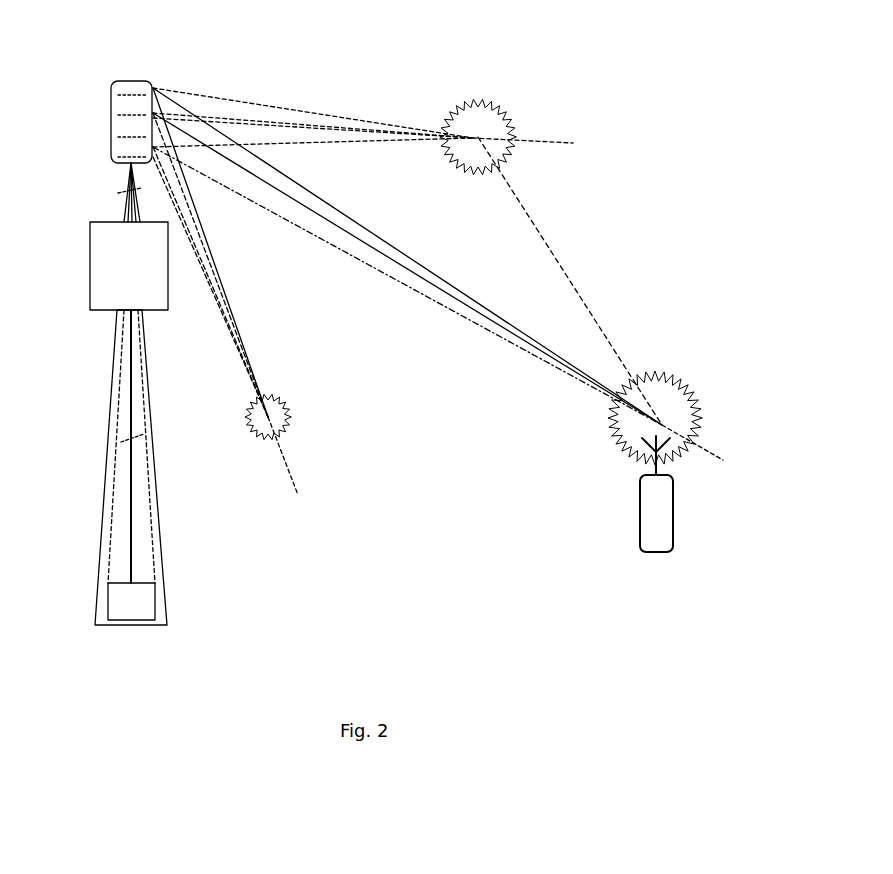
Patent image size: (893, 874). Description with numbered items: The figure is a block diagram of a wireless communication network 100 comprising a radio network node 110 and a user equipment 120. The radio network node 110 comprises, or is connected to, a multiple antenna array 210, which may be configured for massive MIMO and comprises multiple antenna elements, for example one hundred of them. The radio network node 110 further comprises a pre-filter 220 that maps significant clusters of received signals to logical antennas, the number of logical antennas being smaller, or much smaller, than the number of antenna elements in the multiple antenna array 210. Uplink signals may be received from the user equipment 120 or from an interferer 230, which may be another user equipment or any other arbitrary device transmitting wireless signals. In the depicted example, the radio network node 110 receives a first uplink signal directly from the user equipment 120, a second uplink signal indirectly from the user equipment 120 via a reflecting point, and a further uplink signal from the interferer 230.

The wireless communication network 100 is at (609, 64).
The radio network node 110 is at (210, 467).
The user equipment 120 is at (655, 483).
The multiple antenna array 210 is at (221, 113).
The pre-filter 220 is at (129, 236).
The interferer 230 is at (330, 420).